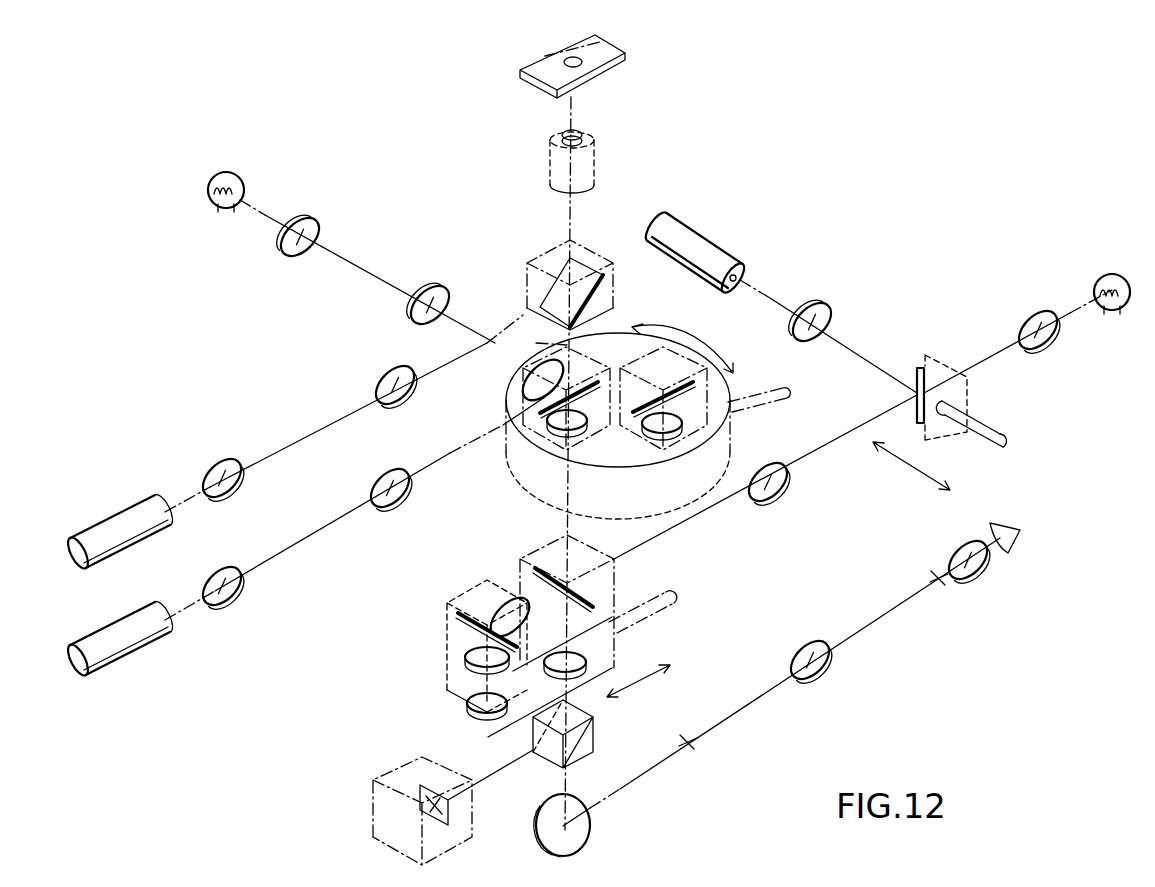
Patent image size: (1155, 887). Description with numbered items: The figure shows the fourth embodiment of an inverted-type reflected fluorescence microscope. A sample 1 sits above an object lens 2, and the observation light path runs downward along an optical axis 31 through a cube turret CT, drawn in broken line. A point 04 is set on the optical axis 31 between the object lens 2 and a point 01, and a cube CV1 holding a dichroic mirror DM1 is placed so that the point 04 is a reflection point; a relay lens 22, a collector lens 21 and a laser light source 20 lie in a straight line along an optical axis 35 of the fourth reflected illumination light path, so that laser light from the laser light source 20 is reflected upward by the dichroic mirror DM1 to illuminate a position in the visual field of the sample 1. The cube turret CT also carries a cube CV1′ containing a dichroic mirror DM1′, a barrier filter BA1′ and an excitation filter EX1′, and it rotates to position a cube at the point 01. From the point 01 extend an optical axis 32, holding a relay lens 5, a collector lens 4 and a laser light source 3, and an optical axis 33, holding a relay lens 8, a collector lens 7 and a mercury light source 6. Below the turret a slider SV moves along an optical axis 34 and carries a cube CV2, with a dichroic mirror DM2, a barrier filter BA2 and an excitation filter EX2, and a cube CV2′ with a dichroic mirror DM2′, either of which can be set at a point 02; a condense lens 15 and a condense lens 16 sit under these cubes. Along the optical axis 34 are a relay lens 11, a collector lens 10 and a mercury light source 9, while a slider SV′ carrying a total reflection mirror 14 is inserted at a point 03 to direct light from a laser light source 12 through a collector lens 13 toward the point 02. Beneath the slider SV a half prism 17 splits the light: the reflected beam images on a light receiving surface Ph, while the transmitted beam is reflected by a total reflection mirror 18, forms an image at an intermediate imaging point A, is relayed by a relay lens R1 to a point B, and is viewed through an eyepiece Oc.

The sample 1 is at (600, 63).
The object lens 2 is at (584, 135).
The laser light source 3 is at (140, 618).
The collector lens 4 is at (218, 572).
The relay lens 5 is at (380, 478).
The mercury light source 6 is at (244, 186).
The collector lens 7 is at (312, 225).
The relay lens 8 is at (436, 298).
The mercury light source 9 is at (1108, 275).
The collector lens 10 is at (1035, 312).
The relay lens 11 is at (780, 497).
The laser light source 12 is at (695, 248).
The collector lens 13 is at (815, 310).
The total reflection mirror 14 is at (918, 368).
The condense lens 15 is at (470, 712).
The condense lens 16 is at (587, 663).
The half prism 17 is at (535, 735).
The total reflection mirror 18 is at (590, 830).
The laser light source 20 is at (120, 515).
The collector lens 21 is at (212, 466).
The relay lens 22 is at (382, 378).
The optical axis 31 is at (575, 203).
The optical axis 32 is at (298, 543).
The optical axis 33 is at (383, 282).
The optical axis 34 is at (830, 445).
The optical axis 35 is at (274, 450).
The point O1 01 is at (577, 395).
The point O2 02 is at (560, 565).
The point O3 03 is at (916, 395).
The point 04 is at (600, 290).
The dichroic mirror DM1 is at (557, 262).
The cube CV1 is at (608, 257).
The cube CV1′ is at (554, 390).
The excitation filter EX1′ is at (528, 380).
The dichroic mirror DM1′ is at (540, 410).
The barrier filter BA1′ is at (555, 430).
The cube turret CT is at (515, 480).
The cube CV2′ is at (618, 567).
The dichroic mirror DM2′ is at (600, 600).
The cube CV2 is at (450, 640).
The dichroic mirror DM2 is at (465, 615).
The excitation filter EX2 is at (497, 605).
The barrier filter BA2 is at (465, 657).
The slider SV is at (450, 705).
The slider SV′ is at (965, 410).
The light receiving surface Ph is at (420, 790).
The relay lens R1 is at (822, 670).
The eyepiece Oc is at (980, 575).
The intermediate imaging point A is at (690, 746).
The point B is at (940, 584).